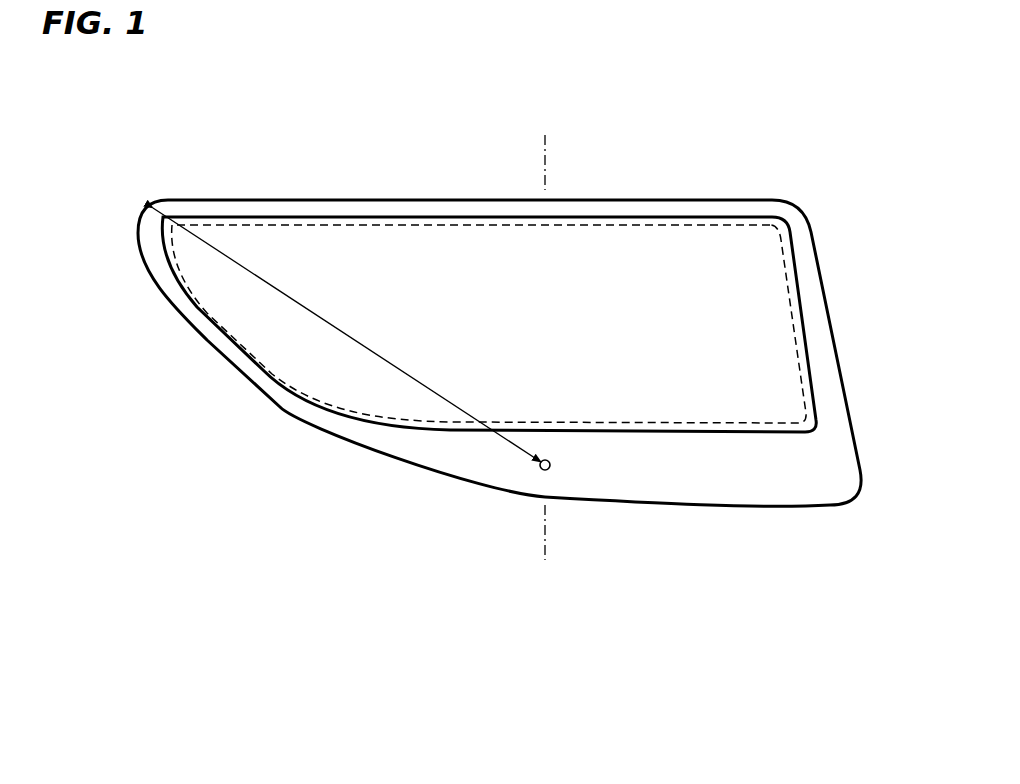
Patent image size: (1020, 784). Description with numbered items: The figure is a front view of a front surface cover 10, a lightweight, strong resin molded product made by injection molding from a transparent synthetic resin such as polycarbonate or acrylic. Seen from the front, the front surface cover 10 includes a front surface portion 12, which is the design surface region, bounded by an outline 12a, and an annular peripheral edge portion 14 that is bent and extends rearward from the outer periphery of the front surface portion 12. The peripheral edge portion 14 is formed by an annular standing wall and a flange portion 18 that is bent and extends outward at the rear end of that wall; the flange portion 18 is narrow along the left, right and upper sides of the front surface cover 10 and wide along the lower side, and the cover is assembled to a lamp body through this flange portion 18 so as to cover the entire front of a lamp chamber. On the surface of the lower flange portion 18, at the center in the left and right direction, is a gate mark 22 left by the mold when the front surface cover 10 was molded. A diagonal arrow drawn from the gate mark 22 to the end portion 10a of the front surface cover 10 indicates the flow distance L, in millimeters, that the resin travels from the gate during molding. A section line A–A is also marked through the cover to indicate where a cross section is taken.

The front surface cover 10 is at (563, 686).
The end portion of the front surface cover 10a is at (150, 205).
The front surface portion 12 is at (752, 292).
The outer edge of display region 12a is at (658, 222).
The peripheral edge portion 14 is at (832, 480).
The flange portion 18 is at (422, 208).
The gate mark 22 is at (540, 472).
The flow distance of the resin L is at (300, 300).
The section line A- A is at (549, 146).